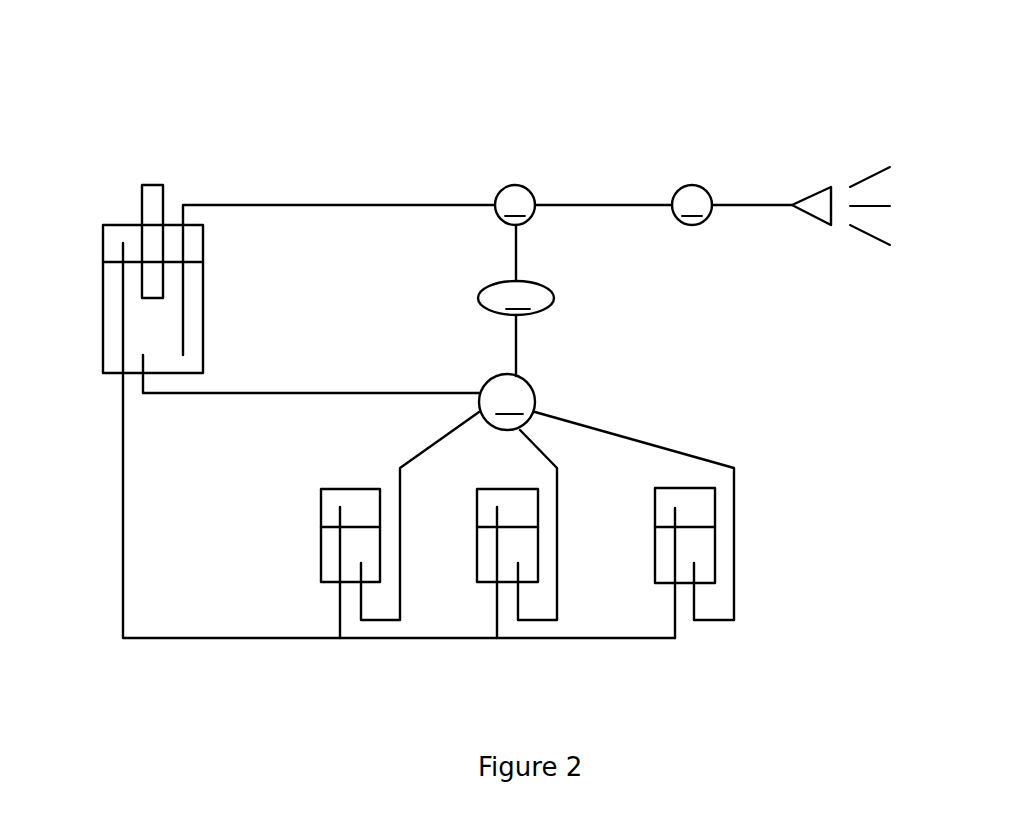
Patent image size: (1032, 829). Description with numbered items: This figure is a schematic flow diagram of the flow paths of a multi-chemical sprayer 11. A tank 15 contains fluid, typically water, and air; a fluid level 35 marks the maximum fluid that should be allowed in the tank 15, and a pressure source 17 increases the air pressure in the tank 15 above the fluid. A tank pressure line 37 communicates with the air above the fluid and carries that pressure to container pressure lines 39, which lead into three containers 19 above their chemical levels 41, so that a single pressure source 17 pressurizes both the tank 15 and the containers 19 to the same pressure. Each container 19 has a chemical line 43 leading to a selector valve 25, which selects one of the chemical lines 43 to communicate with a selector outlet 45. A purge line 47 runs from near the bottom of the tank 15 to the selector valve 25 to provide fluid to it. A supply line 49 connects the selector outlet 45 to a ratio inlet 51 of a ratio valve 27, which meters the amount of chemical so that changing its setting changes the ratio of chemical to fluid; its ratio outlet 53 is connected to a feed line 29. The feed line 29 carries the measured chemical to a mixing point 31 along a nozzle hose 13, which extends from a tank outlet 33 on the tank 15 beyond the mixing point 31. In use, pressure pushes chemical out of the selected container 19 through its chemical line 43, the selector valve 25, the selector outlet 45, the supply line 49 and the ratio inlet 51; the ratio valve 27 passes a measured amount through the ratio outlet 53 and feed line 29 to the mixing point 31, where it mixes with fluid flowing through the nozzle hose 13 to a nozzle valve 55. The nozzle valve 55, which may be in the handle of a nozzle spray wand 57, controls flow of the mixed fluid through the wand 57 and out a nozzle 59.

The sprayer 11 is at (418, 112).
The nozzle hose 13 is at (477, 207).
The tank 15 is at (203, 343).
The pressure source 17 is at (152, 190).
The containers 19 is at (350, 487).
The selector valve 25 is at (507, 402).
The ratio valve 27 is at (516, 298).
The feed line 29 is at (513, 246).
The mixing point 31 is at (515, 205).
The tank outlet 33 is at (183, 300).
The fluid level 35 is at (113, 260).
The tank pressure line 37 is at (125, 533).
The container pressure lines 39 is at (338, 612).
The chemical levels 41 is at (332, 525).
The chemical lines 43 is at (400, 585).
The selector outlet 45 is at (520, 377).
The purge line 47 is at (320, 392).
The supply line 49 is at (513, 340).
The ratio inlet 51 is at (519, 318).
The ratio outlet 53 is at (517, 283).
The nozzle valve 55 is at (623, 205).
The nozzle spray wand 57 is at (745, 204).
The nozzle 59 is at (815, 215).